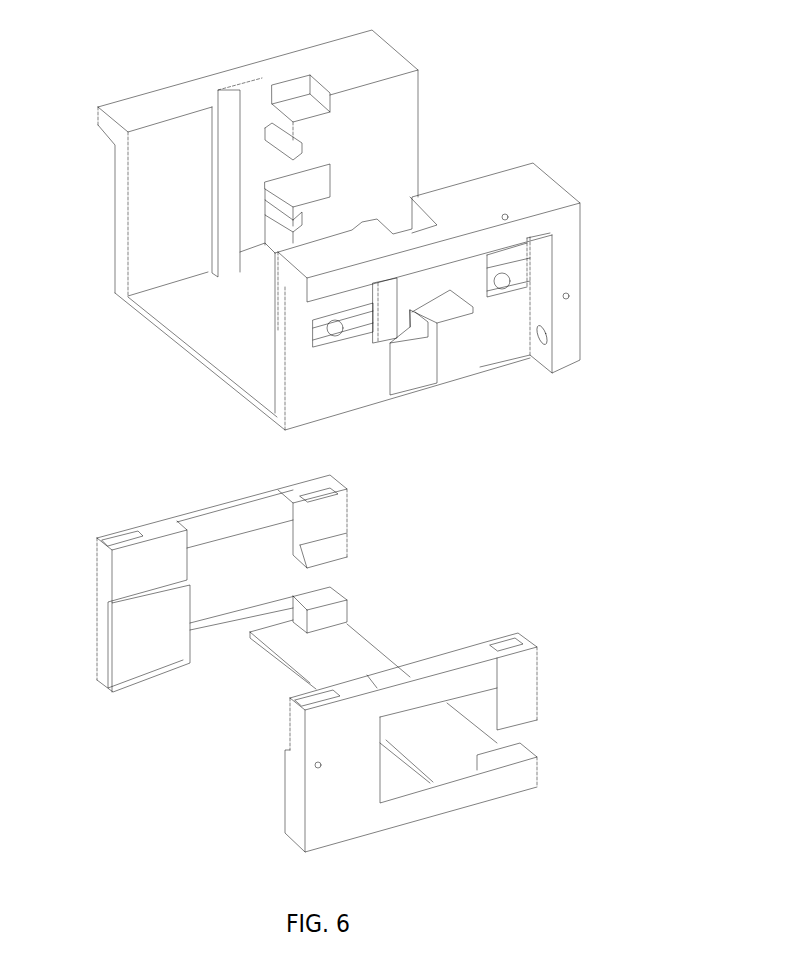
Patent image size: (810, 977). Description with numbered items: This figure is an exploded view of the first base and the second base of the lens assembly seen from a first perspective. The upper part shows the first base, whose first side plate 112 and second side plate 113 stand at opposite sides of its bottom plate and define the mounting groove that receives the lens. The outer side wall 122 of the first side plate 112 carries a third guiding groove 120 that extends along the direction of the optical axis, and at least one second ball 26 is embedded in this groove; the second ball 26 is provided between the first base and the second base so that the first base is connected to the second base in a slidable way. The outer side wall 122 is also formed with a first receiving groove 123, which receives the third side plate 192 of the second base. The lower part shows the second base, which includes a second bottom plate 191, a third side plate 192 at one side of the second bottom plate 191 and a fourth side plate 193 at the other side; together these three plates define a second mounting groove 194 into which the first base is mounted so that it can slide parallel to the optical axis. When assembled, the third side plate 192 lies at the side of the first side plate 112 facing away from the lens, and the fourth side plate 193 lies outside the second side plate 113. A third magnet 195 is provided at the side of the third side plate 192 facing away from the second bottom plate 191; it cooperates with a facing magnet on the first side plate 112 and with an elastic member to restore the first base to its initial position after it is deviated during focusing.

The second side plate 113 is at (370, 52).
The first side plate 112 is at (517, 190).
The third guiding groove 120 is at (520, 275).
The second ball 26 is at (510, 293).
The outer side wall 122 is at (503, 335).
The first receiving groove 123 is at (457, 345).
The second bottom plate 191 is at (300, 688).
The third side plate 192 is at (298, 800).
The fourth side plate 193 is at (107, 640).
The second mounting groove 194 is at (333, 657).
The third magnet 195 is at (520, 637).